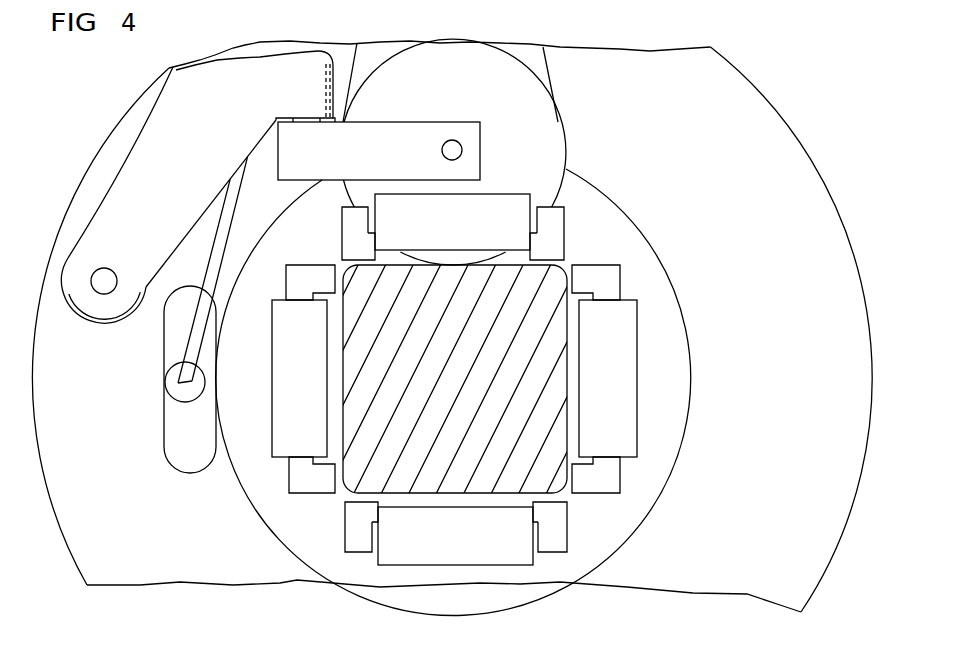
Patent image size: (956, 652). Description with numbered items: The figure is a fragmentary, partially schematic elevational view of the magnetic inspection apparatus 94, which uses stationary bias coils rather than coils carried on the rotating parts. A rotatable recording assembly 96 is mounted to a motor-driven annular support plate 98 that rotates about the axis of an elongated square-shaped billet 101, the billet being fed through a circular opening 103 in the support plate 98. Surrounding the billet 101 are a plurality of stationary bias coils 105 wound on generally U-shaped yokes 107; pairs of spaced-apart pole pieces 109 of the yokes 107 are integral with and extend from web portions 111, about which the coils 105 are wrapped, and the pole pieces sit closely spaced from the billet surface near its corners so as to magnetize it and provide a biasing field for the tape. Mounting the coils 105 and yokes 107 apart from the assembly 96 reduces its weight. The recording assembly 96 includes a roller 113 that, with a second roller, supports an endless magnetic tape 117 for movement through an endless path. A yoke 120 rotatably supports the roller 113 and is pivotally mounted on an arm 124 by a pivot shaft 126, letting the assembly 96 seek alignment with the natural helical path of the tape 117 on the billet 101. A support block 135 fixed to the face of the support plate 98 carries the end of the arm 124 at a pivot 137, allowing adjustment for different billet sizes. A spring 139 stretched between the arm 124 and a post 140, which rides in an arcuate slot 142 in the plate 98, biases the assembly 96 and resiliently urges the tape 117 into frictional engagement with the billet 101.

The magnetic inspection apparatus 94 is at (168, 602).
The rotatable recording assembly 96 is at (488, 361).
The annular support plate 98 is at (747, 107).
The billet 101 is at (547, 453).
The circular opening 103 is at (690, 385).
The bias coils 105 is at (493, 203).
The yokes 107 is at (573, 225).
The pole pieces 109 is at (323, 278).
The web portions 111 is at (610, 295).
The roller 113 is at (447, 53).
The magnetic tape 117 is at (561, 78).
The yoke 120 is at (390, 138).
The arm 124 is at (157, 132).
The pivot shaft 126 is at (303, 120).
The support block 135 is at (65, 278).
The pivot axis 137 is at (105, 279).
The spring 139 is at (193, 332).
The post 140 is at (182, 382).
The arcuate slot 142 is at (166, 434).